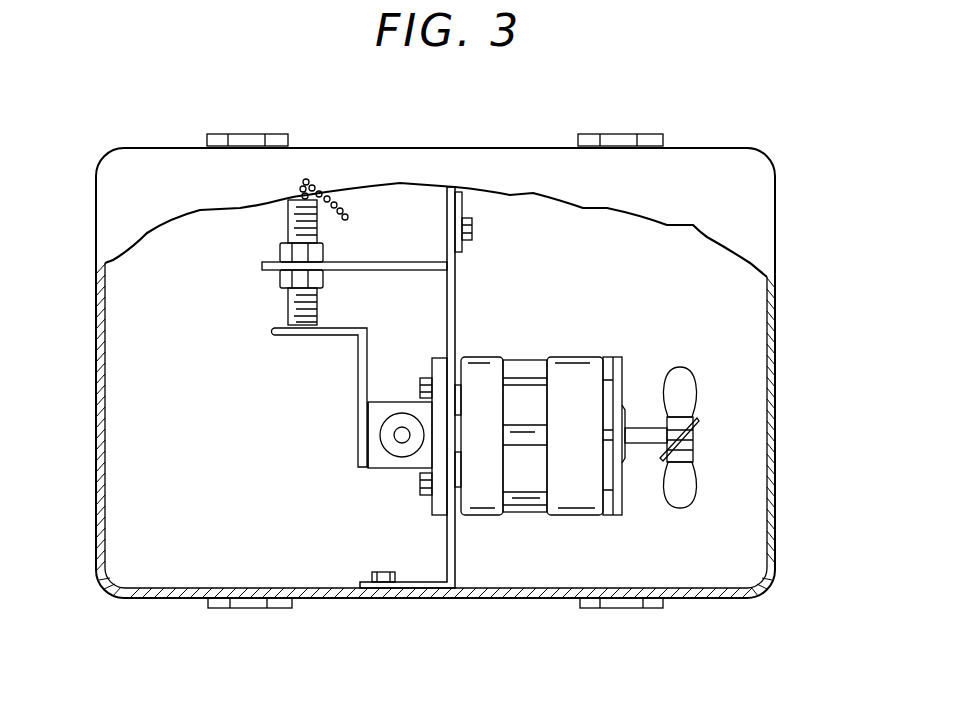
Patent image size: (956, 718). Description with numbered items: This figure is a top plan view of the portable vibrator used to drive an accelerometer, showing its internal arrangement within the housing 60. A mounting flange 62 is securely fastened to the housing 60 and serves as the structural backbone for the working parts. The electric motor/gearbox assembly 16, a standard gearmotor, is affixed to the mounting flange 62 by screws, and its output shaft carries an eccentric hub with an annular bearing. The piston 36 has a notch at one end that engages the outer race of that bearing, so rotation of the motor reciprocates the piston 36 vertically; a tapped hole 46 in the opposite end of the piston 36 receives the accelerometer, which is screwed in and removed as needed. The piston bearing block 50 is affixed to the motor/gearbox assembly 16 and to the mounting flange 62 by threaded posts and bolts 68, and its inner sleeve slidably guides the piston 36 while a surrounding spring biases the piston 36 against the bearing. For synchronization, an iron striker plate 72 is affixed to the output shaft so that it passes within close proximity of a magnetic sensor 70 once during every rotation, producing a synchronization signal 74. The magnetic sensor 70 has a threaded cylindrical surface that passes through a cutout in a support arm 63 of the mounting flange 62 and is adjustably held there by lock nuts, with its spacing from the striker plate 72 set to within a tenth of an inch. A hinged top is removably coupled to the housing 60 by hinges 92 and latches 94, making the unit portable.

The electric motor/gearbox assembly 16 is at (565, 357).
The piston 36 is at (403, 452).
The tapped hole 46 is at (398, 435).
The piston bearing block 50 is at (377, 462).
The housing 60 is at (775, 395).
The mounting flange 62 is at (455, 307).
The support arm 63 is at (355, 260).
The bolts 68 is at (420, 382).
The magnetic sensor 70 is at (287, 300).
The iron striker plate 72 is at (287, 337).
The synchronization signal 74 is at (337, 197).
The hinges 92 is at (243, 133).
The latches 94 is at (248, 608).